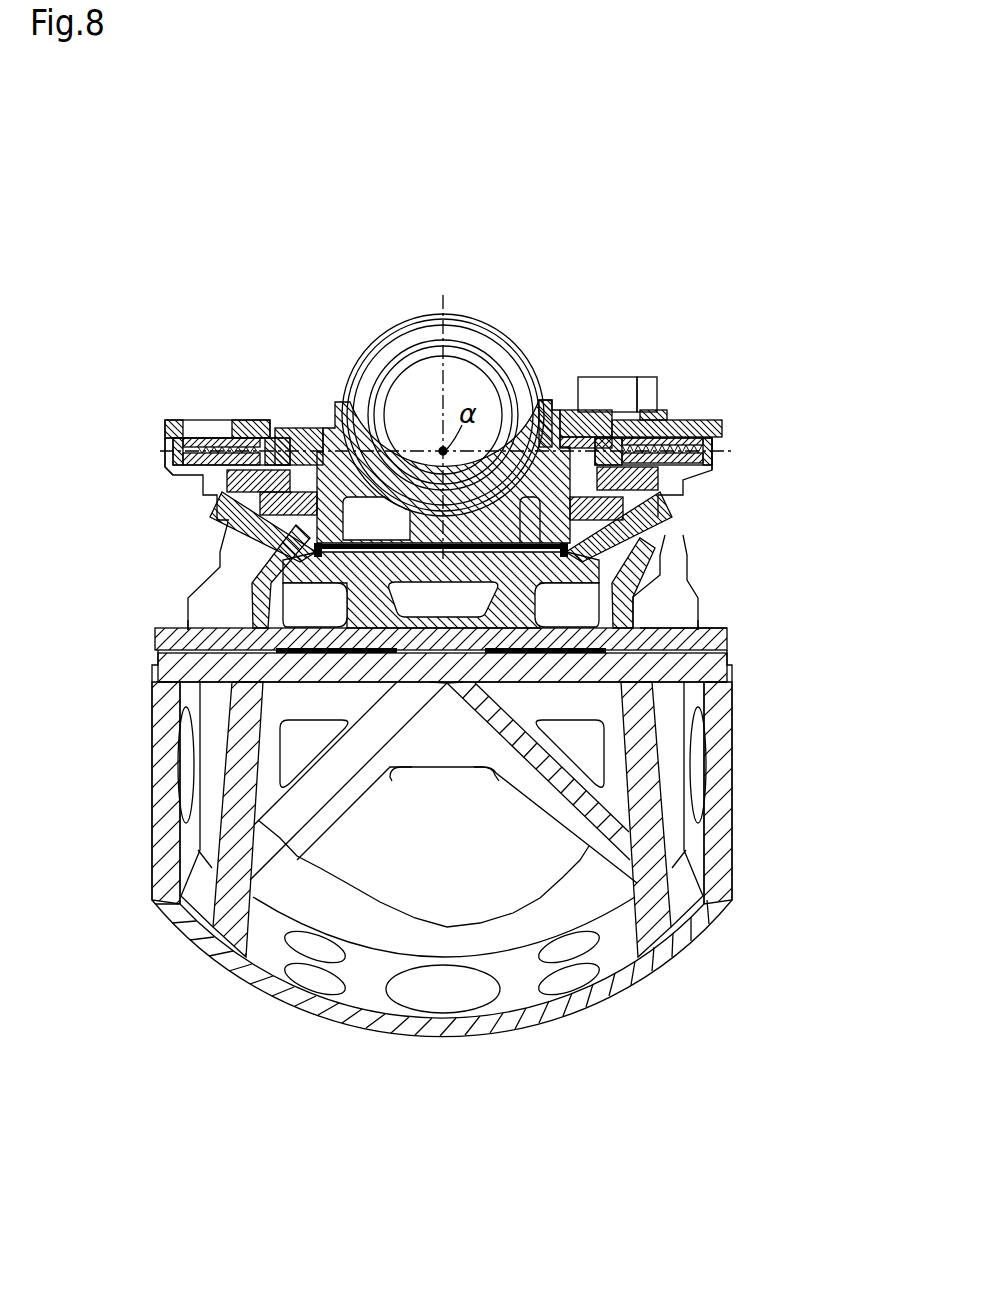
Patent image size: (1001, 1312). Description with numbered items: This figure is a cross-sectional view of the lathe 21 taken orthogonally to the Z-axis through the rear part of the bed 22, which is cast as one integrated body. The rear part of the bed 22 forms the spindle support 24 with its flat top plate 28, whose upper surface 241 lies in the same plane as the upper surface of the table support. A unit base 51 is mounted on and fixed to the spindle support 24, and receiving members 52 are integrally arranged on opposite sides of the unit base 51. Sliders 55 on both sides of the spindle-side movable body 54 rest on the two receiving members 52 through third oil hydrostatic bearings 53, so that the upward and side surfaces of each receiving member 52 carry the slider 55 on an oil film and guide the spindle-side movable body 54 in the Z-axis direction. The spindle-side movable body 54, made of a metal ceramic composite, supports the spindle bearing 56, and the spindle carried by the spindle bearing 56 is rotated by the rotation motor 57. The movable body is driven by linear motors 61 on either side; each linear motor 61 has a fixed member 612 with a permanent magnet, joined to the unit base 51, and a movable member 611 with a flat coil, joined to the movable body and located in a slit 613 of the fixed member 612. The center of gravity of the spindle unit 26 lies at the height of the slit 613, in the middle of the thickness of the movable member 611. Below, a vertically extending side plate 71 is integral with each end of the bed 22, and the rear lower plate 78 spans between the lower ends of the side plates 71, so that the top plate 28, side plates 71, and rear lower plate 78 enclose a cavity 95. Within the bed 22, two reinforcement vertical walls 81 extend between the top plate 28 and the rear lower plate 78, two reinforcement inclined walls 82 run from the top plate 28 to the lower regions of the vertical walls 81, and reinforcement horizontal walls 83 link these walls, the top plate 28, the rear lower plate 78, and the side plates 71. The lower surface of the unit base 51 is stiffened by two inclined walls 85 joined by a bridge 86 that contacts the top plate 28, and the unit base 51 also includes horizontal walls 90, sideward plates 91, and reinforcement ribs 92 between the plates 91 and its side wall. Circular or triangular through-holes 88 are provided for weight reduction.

The lathe 21 is at (673, 296).
The bed 22 is at (737, 699).
The spindle support 24 is at (157, 640).
The upper surface 241 is at (728, 642).
The spindle unit 26 is at (490, 322).
The top plate 28 is at (441, 640).
The unit base 51 is at (662, 630).
The receiving member 52 is at (167, 459).
The third oil hydrostatic bearing 53 is at (236, 530).
The spindle-side movable body 54 is at (549, 398).
The slider 55 is at (260, 503).
The spindle bearing 56 is at (412, 318).
The rotation motor 57 is at (215, 513).
The linear motor 61 is at (178, 449).
The movable member 611 is at (254, 441).
The fixed member 612 is at (203, 430).
The slit 613 is at (237, 441).
The side plate 71 is at (152, 752).
The rear lower plate 78 is at (380, 1021).
The reinforcement vertical wall 81 is at (300, 858).
The reinforcement inclined wall 82 is at (382, 749).
The reinforcement horizontal wall 83 is at (362, 726).
The inclined wall 85 is at (367, 606).
The bridge 86 is at (474, 684).
The through-hole 88 is at (706, 731).
The horizontal wall 90 is at (317, 654).
The plate 91 is at (182, 617).
The reinforcement rib 92 is at (222, 572).
The cavity 95 is at (429, 846).